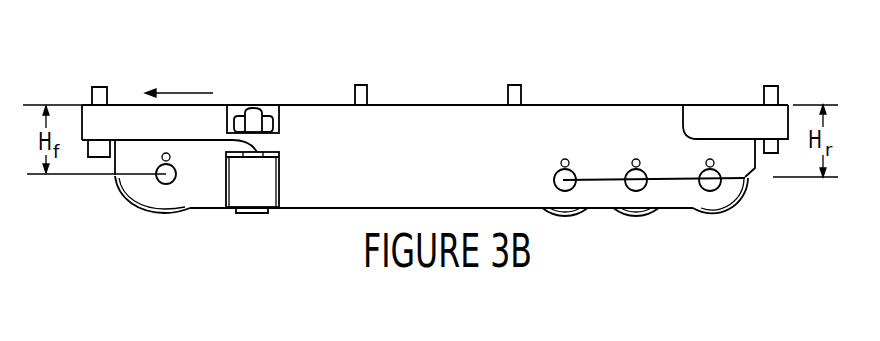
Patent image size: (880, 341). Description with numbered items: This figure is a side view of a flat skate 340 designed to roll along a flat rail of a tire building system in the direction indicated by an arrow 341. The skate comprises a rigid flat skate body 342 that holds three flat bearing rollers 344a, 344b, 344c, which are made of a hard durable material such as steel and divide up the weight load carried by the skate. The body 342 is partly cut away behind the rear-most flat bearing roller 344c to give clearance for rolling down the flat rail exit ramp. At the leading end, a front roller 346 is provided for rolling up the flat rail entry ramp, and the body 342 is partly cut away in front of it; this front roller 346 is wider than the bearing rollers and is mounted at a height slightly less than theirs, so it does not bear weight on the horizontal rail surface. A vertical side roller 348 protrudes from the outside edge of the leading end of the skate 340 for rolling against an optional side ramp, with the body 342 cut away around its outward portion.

The flat skate 340 is at (251, 40).
The arrow 341 is at (179, 82).
The flat skate body 342 is at (619, 104).
The flat bearing roller 344a is at (568, 217).
The flat bearing roller 344b is at (638, 218).
The flat bearing roller 344c is at (738, 202).
The front roller 346 is at (145, 213).
The vertical side roller 348 is at (263, 192).